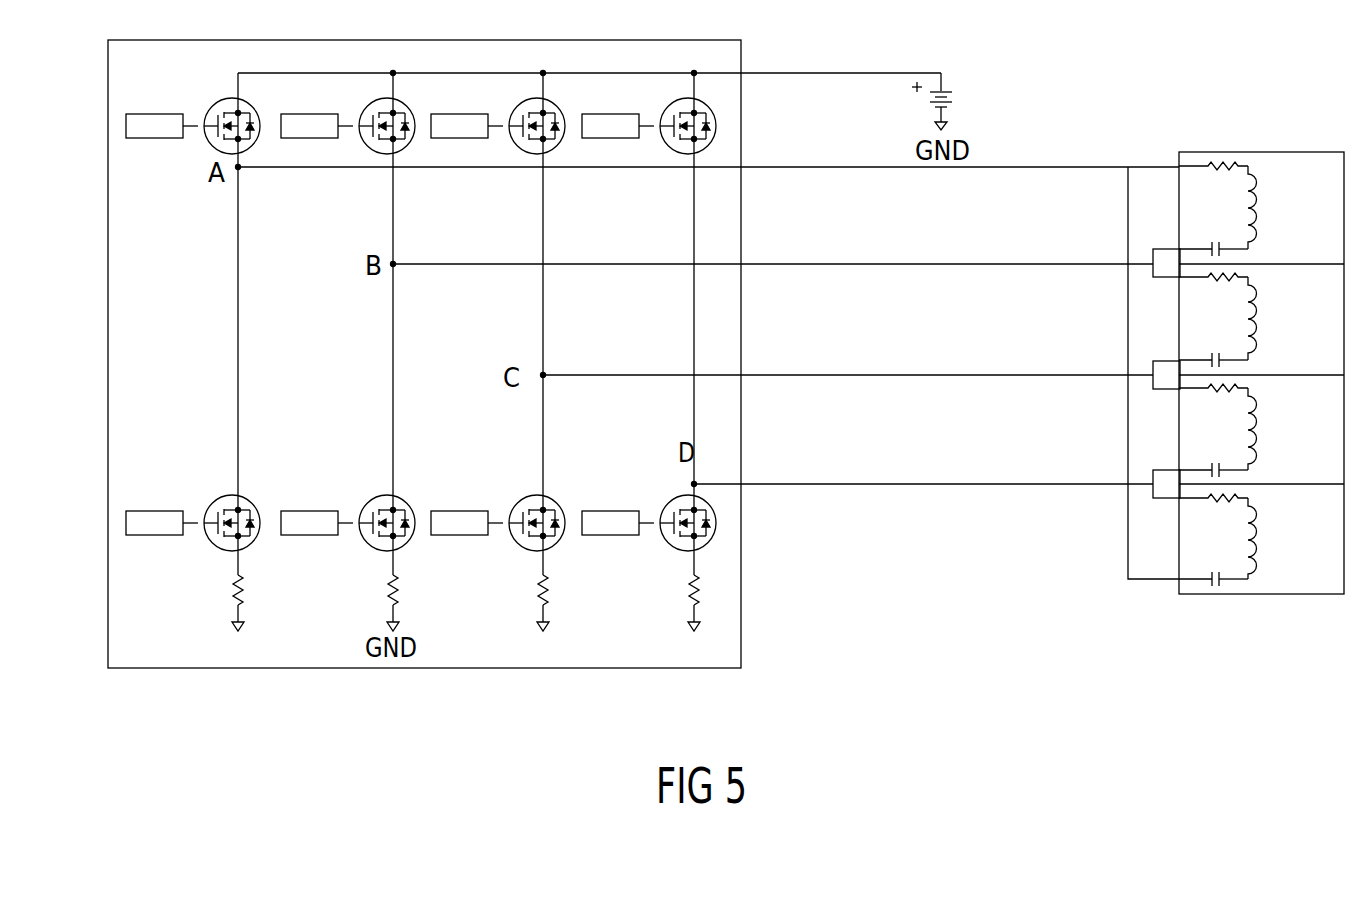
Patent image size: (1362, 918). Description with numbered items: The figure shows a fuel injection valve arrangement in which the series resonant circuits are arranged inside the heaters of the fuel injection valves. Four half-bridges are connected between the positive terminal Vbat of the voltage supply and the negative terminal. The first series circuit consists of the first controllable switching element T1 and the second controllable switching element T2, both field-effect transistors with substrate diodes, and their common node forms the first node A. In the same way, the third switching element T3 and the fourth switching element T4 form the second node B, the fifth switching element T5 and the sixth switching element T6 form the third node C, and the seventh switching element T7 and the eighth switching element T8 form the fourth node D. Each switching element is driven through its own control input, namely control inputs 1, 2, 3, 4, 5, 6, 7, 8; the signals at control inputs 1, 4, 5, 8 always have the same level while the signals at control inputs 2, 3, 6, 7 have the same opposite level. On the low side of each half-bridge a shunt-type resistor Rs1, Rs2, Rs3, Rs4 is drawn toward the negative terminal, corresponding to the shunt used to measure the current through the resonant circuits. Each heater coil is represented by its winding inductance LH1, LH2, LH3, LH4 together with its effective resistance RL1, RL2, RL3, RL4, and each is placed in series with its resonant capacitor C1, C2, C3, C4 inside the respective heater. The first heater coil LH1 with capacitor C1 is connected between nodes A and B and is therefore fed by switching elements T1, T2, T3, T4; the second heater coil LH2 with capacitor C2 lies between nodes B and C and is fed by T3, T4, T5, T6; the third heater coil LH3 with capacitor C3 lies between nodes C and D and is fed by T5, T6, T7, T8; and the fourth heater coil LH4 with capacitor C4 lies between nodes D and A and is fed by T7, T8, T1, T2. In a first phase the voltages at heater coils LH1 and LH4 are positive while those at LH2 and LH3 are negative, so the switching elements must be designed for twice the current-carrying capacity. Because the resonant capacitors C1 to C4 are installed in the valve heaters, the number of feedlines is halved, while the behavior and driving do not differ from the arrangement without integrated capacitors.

The control input 1 is at (162, 126).
The control input 2 is at (162, 523).
The control input 3 is at (317, 126).
The control input 4 is at (317, 523).
The control input 5 is at (467, 126).
The control input 6 is at (467, 523).
The control input 7 is at (618, 126).
The control input 8 is at (618, 523).
The first controllable switching element T1 is at (221, 114).
The second controllable switching element T2 is at (224, 509).
The third controllable switching element T3 is at (376, 114).
The fourth controllable switching element T4 is at (379, 509).
The fifth controllable switching element T5 is at (526, 114).
The sixth controllable switching element T6 is at (529, 509).
The seventh controllable switching element T7 is at (677, 114).
The eighth controllable switching element T8 is at (680, 509).
The sense resistor Rs1 is at (214, 592).
The sense resistor Rs2 is at (369, 592).
The sense resistor Rs3 is at (519, 592).
The sense resistor Rs4 is at (670, 592).
The load resistance RL1 is at (1213, 183).
The load resistance RL2 is at (1213, 294).
The load resistance RL3 is at (1213, 405).
The load resistance RL4 is at (1213, 515).
The first capacitor C1 is at (1213, 232).
The second capacitor C2 is at (1213, 343).
The third capacitor C3 is at (1213, 453).
The fourth capacitor C4 is at (1213, 563).
The first heater coil LH1 is at (1277, 207).
The second heater coil LH2 is at (1277, 318).
The third heater coil LH3 is at (1277, 429).
The fourth heater coil LH4 is at (1277, 538).
The positive terminal of the voltage supply Vbat is at (963, 101).